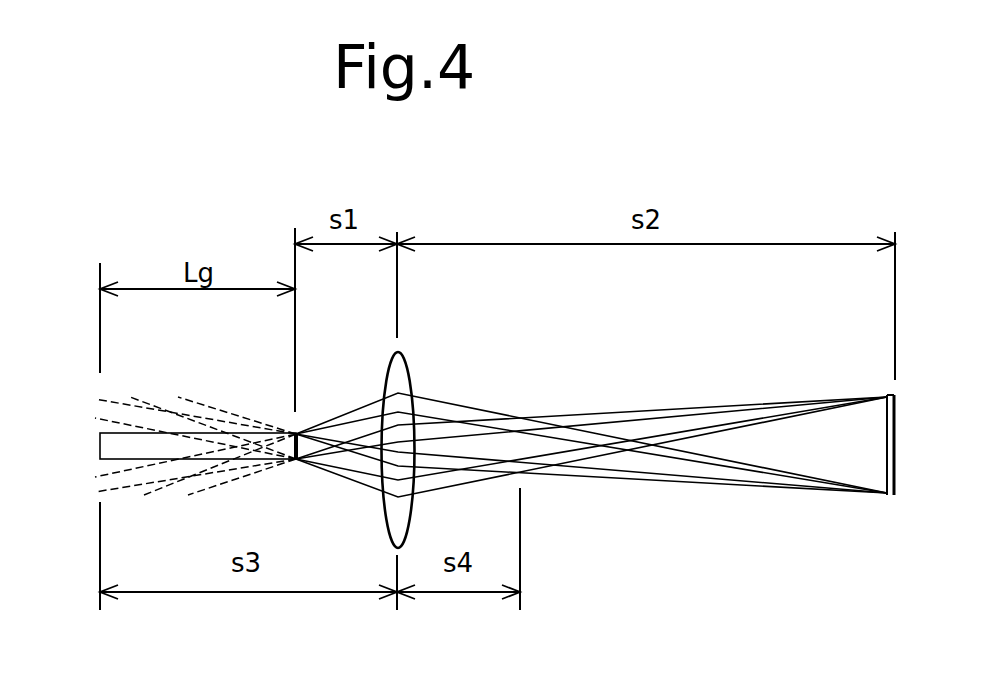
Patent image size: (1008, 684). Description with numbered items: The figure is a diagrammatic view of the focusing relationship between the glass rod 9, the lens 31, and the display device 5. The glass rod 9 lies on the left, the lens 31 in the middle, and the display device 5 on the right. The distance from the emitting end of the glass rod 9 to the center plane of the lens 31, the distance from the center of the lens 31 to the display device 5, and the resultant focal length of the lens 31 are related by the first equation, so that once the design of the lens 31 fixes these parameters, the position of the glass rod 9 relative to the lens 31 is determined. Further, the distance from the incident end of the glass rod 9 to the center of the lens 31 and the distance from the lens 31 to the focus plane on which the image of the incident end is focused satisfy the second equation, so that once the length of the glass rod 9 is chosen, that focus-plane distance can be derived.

The glass rod 9 is at (100, 433).
The lens 31 is at (410, 362).
The display device 5 is at (890, 496).